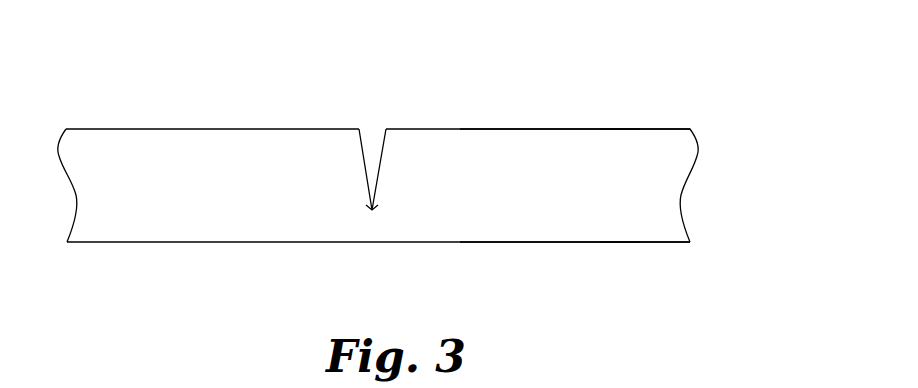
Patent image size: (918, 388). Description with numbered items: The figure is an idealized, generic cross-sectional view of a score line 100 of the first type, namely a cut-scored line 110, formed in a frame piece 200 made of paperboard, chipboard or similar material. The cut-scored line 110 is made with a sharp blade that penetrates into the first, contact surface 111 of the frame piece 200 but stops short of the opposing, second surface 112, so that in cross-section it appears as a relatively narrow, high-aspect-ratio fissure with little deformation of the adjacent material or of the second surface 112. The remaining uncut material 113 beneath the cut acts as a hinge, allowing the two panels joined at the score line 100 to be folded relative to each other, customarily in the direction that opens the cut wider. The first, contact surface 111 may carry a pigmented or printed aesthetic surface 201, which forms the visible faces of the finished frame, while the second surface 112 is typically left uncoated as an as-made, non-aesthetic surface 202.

The score line 100 is at (355, 104).
The cut-scored line 110 is at (378, 88).
The first, contact surface 111 is at (626, 98).
The second surface 112 is at (627, 269).
The remaining uncut material 113 is at (373, 223).
The frame piece 200 is at (110, 140).
The aesthetic surface 201 is at (550, 86).
The as-made surface 202 is at (554, 272).